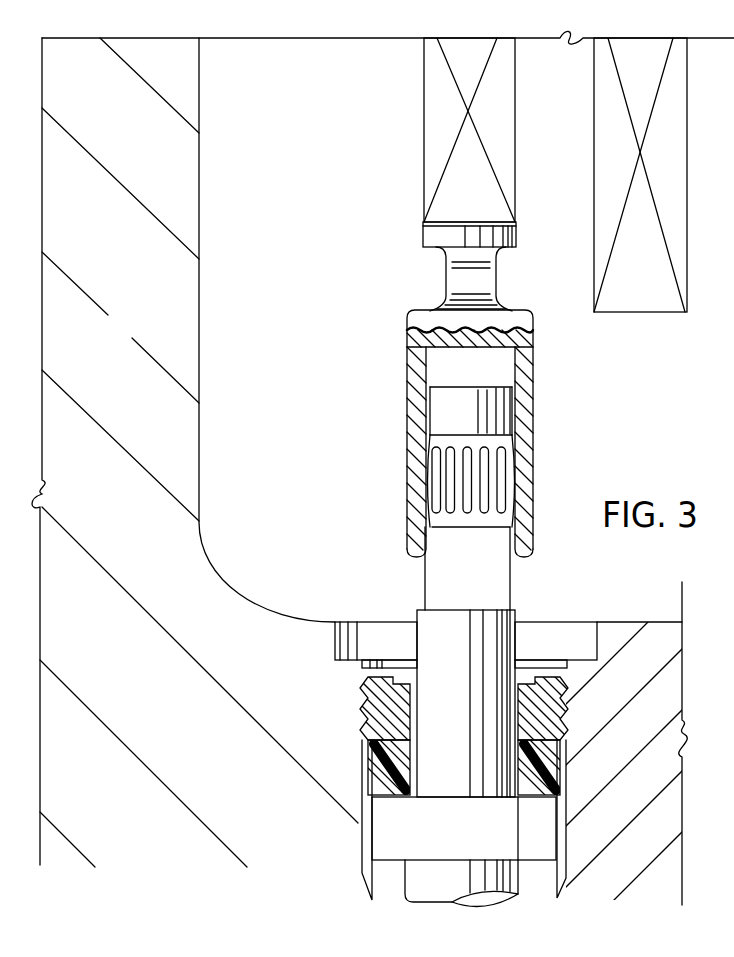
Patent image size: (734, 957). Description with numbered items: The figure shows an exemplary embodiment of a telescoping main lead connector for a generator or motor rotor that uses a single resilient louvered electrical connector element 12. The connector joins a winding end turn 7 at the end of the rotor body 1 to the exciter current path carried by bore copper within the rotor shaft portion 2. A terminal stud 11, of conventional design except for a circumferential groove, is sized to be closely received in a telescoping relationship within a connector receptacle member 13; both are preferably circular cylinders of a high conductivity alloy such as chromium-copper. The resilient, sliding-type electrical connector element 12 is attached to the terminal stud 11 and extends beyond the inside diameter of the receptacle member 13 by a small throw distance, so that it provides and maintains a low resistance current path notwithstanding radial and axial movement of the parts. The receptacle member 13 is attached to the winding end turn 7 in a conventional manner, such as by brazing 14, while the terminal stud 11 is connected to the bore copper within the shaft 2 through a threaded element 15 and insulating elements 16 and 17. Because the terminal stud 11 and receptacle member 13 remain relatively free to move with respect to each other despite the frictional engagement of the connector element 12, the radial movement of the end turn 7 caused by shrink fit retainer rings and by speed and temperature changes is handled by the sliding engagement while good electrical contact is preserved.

The rotor body 1 is at (130, 331).
The rotor shaft portion 2 is at (618, 765).
The winding end turn 7 is at (458, 153).
The terminal stud 11 is at (432, 630).
The resilient louvered electrical connector element 12 is at (443, 475).
The connector receptacle member 13 is at (415, 400).
The brazing 14 is at (440, 226).
The threaded element 15 is at (375, 698).
The insulating element 16 is at (380, 758).
The insulating element 17 is at (370, 838).